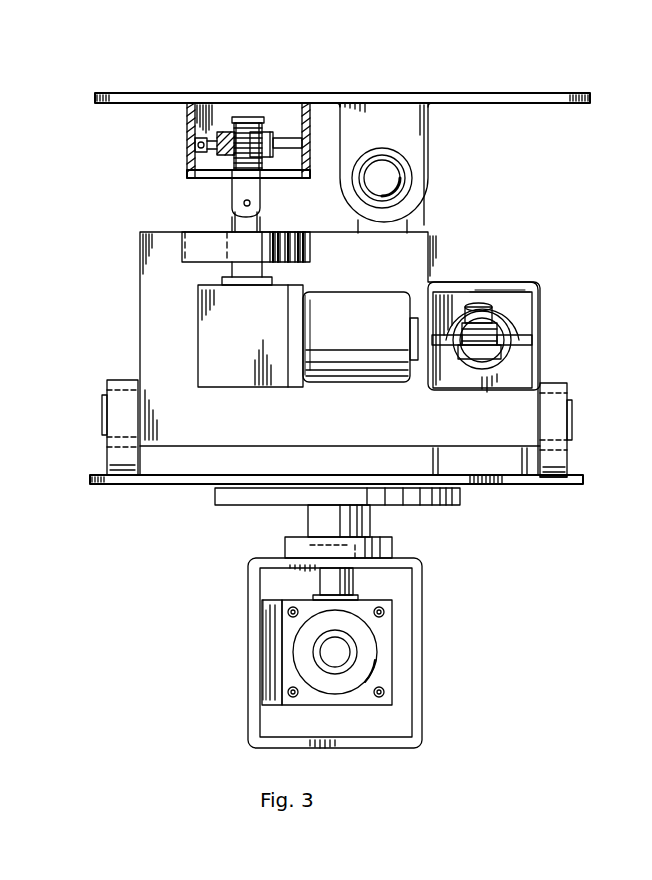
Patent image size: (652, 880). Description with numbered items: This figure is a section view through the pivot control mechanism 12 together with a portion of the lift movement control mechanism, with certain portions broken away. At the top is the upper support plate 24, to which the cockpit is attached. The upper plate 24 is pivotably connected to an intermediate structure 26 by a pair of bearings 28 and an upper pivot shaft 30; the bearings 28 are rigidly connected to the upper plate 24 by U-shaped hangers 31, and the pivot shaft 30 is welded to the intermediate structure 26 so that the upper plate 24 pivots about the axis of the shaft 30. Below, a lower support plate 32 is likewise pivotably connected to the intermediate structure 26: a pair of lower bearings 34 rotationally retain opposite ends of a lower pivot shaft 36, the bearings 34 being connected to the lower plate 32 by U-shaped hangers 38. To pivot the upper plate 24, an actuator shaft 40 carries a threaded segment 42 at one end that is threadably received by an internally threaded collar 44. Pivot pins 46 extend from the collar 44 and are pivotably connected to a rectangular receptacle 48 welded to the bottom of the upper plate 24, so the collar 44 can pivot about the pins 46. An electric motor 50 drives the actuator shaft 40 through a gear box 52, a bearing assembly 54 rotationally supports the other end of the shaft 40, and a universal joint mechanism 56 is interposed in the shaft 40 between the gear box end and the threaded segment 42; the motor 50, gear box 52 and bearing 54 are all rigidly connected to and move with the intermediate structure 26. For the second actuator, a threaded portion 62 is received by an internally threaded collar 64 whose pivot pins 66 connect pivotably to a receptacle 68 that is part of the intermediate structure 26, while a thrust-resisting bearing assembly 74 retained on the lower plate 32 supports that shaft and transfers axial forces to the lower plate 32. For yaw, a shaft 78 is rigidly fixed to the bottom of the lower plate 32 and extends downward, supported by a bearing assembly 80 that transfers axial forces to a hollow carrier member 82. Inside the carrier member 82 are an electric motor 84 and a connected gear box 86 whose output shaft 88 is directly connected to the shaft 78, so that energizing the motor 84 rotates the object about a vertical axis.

The pivot control mechanism 12 is at (530, 244).
The upper support plate 24 is at (500, 94).
The intermediate structure 26 is at (428, 252).
The bearings 28 is at (404, 167).
The upper pivot shaft 30 is at (394, 181).
The U-shaped hangers 31 is at (414, 135).
The lower support plate 32 is at (146, 491).
The lower bearings 34 is at (118, 380).
The lower pivot shaft 36 is at (102, 414).
The U-shaped hangers 38 is at (106, 451).
The actuator shaft 40 is at (232, 185).
The threaded segment 42 is at (249, 115).
The internally threaded collar 44 is at (222, 130).
The pivot pins 46 is at (288, 136).
The rectangular receptacle 48 is at (187, 117).
The electric motor 50 is at (356, 360).
The gear box 52 is at (242, 384).
The bearing assembly 54 is at (223, 248).
The universal joint mechanism 56 is at (245, 202).
The threaded portion 62 is at (482, 311).
The internally threaded collar 64 is at (466, 362).
The pivot pins 66 is at (516, 341).
The receptacle 68 is at (478, 282).
The bearing assembly 74 is at (498, 368).
The shaft 78 is at (372, 521).
The bearing assembly 80 is at (285, 542).
The carrier member 82 is at (422, 588).
The electric motor 84 is at (376, 655).
The gear box 86 is at (400, 637).
The output shaft 88 is at (350, 583).